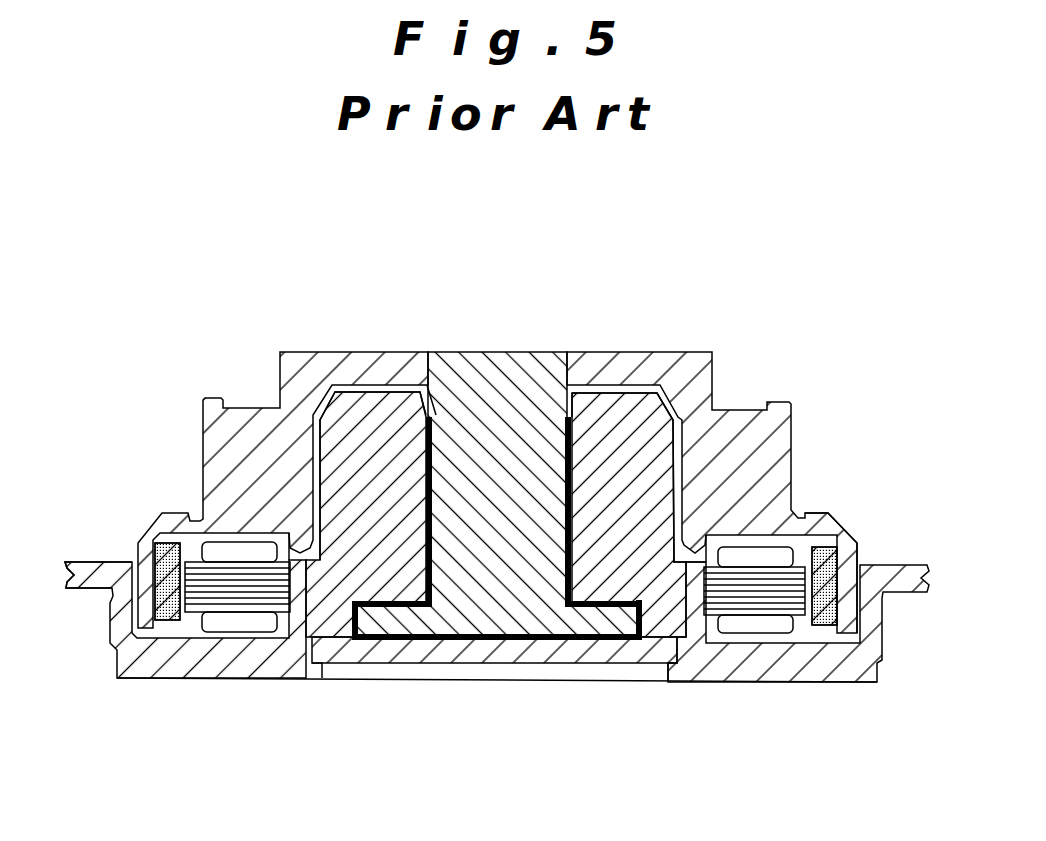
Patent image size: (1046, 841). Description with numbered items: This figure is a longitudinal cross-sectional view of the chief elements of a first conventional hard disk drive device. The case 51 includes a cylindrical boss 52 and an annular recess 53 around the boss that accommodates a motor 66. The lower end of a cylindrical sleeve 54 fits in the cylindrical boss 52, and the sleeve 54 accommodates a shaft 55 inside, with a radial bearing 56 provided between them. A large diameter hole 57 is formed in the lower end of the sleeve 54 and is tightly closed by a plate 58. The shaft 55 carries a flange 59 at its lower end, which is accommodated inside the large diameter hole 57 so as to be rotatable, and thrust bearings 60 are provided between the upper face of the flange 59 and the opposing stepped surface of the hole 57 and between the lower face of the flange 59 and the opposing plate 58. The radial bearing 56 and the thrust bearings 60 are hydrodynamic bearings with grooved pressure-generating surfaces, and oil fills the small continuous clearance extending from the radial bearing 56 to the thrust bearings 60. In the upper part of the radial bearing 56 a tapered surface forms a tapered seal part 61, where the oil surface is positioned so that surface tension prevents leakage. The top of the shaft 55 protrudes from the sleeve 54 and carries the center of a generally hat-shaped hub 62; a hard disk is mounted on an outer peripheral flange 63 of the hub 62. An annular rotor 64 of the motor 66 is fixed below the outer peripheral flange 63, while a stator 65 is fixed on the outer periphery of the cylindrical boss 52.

The case 51 is at (98, 573).
The cylindrical boss 52 is at (300, 630).
The annular recess 53 is at (191, 628).
The cylindrical sleeve 54 is at (378, 453).
The shaft 55 is at (478, 452).
The radial bearing 56 is at (590, 502).
The large diameter hole 57 is at (352, 618).
The plate 58 is at (453, 647).
The flange 59 is at (606, 620).
The thrust bearings 60 is at (619, 638).
The tapered seal part 61 is at (565, 426).
The hub 62 is at (730, 468).
The outer peripheral flange 63 is at (822, 518).
The annular rotor 64 is at (817, 630).
The stator 65 is at (762, 597).
The motor 66 is at (872, 742).